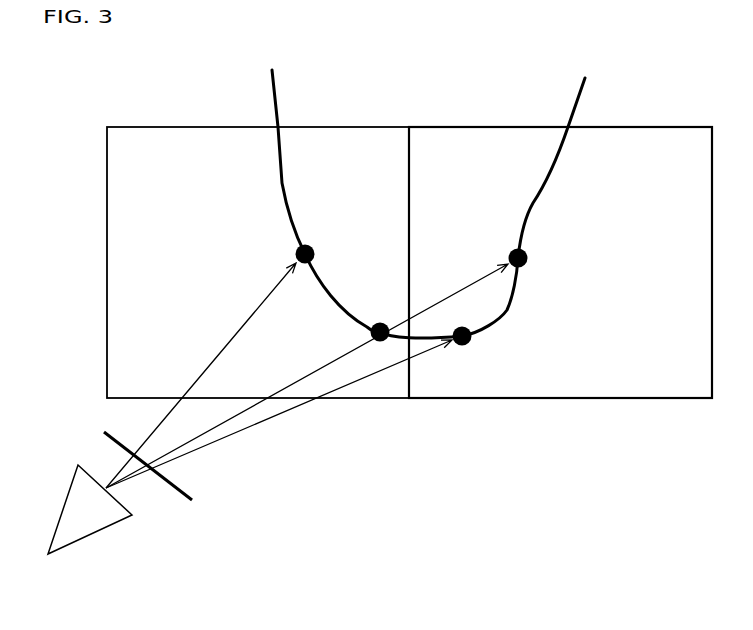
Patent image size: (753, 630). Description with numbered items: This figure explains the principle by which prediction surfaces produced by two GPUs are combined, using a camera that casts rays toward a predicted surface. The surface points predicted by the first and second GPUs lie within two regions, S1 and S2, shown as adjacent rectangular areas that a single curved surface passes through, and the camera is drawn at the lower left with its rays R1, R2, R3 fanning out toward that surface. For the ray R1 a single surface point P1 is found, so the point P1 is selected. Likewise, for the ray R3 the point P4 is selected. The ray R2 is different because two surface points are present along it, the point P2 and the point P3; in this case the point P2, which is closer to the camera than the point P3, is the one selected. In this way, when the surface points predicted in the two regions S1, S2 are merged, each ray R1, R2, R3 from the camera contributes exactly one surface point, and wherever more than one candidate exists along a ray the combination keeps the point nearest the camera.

The first surface region S1 is at (258, 262).
The second surface region S2 is at (560, 262).
The point P1 is at (281, 251).
The point P2 is at (389, 313).
The point P3 is at (544, 261).
The point P4 is at (487, 348).
The ray R1 is at (201, 375).
The ray R2 is at (307, 376).
The ray R3 is at (279, 414).
The element camera is at (159, 493).